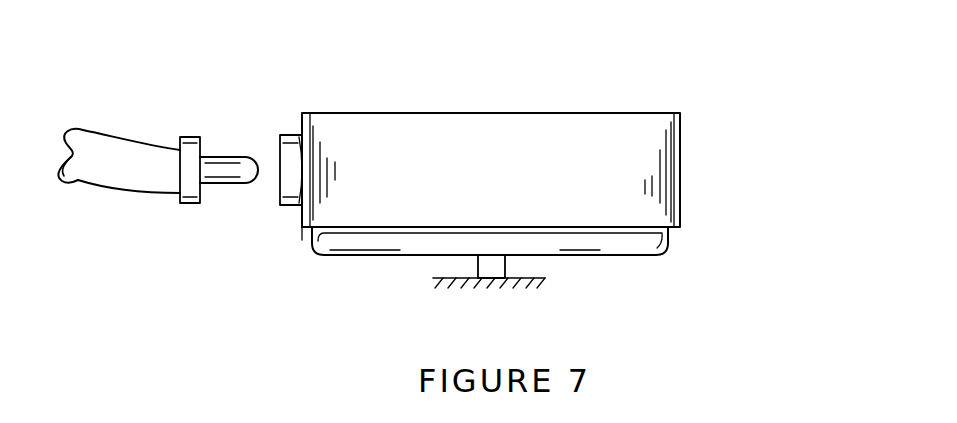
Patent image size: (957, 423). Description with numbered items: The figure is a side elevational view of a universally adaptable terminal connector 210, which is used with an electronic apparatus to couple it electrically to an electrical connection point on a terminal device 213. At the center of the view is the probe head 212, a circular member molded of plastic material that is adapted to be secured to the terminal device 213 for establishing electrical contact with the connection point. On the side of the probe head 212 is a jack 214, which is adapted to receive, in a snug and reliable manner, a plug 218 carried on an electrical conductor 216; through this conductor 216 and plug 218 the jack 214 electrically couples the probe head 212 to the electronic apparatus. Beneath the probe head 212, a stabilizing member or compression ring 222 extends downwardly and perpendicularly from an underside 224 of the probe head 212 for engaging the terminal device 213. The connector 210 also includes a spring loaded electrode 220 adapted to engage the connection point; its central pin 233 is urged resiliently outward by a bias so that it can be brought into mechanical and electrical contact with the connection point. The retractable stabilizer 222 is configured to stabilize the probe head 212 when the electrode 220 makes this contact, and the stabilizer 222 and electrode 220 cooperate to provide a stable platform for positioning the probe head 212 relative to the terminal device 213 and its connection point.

The universally adaptable terminal connector 210 is at (673, 75).
The probe head 212 is at (661, 152).
The terminal device 213 is at (448, 279).
The jack 214 is at (282, 207).
The electrical conductor 216 is at (87, 143).
The plug 218 is at (231, 157).
The spring loaded electrode 220 is at (505, 267).
The compression ring 222 is at (668, 250).
The underside 224 is at (305, 228).
The central pin 233 is at (493, 255).